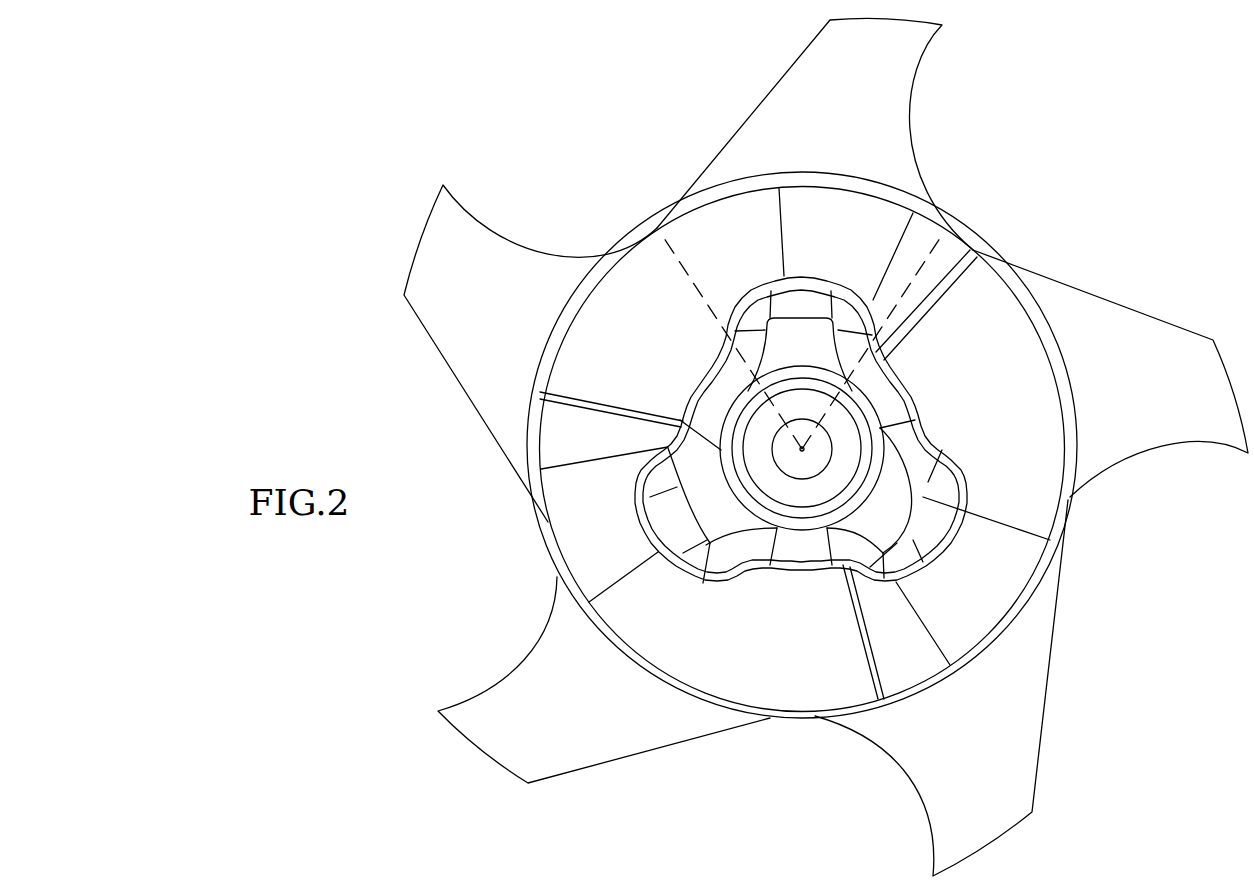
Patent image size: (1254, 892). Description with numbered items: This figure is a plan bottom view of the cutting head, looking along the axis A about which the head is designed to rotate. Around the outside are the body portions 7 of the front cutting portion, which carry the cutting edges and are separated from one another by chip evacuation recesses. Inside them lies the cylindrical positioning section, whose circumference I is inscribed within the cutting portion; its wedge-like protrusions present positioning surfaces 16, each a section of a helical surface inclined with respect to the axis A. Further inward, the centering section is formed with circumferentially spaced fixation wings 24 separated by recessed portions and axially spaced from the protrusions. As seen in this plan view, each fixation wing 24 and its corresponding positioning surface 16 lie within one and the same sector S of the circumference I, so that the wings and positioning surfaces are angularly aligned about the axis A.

The body portions 7 is at (873, 98).
The positioning surfaces 16 is at (873, 230).
The fixation wings 24 is at (797, 322).
The axis A is at (802, 352).
The sector S is at (702, 243).
The circumference I is at (1074, 503).